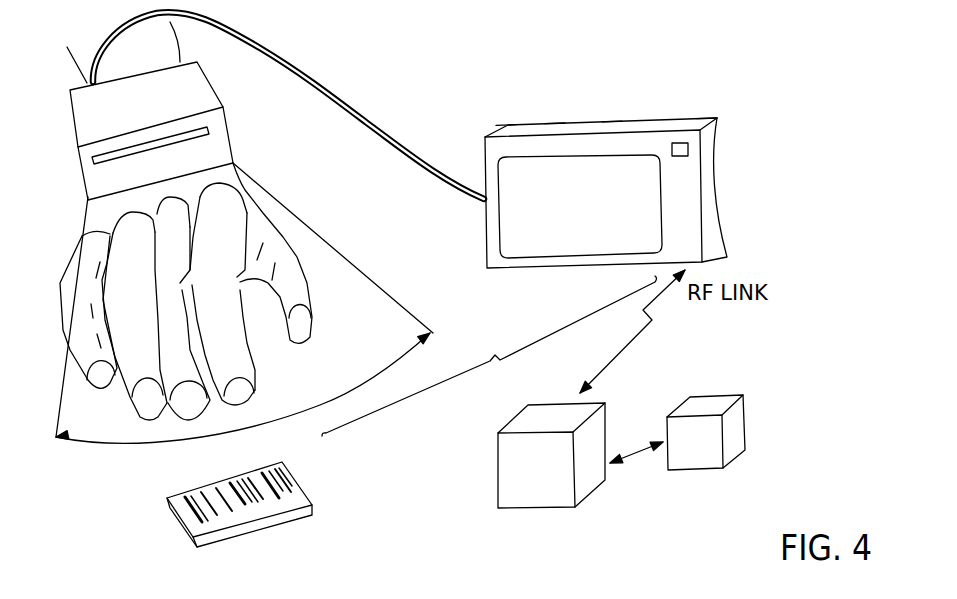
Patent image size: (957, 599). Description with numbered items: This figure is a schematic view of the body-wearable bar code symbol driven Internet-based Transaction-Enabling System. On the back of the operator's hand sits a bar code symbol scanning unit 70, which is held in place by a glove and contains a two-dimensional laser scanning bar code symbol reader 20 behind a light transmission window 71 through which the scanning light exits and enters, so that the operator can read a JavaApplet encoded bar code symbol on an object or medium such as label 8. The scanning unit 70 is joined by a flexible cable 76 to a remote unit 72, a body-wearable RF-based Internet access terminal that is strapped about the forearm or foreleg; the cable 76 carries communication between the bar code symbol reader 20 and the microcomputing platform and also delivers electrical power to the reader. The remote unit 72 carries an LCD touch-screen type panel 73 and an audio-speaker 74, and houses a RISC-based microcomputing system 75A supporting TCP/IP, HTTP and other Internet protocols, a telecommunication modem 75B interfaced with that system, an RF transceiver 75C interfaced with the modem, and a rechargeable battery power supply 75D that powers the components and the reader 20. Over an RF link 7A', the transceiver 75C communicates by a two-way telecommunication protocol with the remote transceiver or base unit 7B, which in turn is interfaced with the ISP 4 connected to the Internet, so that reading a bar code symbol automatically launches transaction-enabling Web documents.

The ISP 4 is at (704, 395).
The wireless communication link 7A' is at (489, 356).
The base unit 7B is at (498, 490).
The bar code label 8 is at (193, 500).
The 2-D laser scanning bar code symbol reader 20 is at (200, 90).
The bar code symbol scanning unit 70 is at (78, 175).
The light transmission window 71 is at (195, 143).
The remote unit 72 is at (553, 270).
The LCD touch-screen type panel 73 is at (508, 170).
The audio-speaker 74 is at (688, 148).
The RISC-based microcomputing system 75A is at (505, 127).
The telecommunication modem 75B is at (555, 120).
The RF transceiver 75C is at (612, 122).
The battery power supply 75D is at (707, 120).
The flexible cable 76 is at (263, 45).